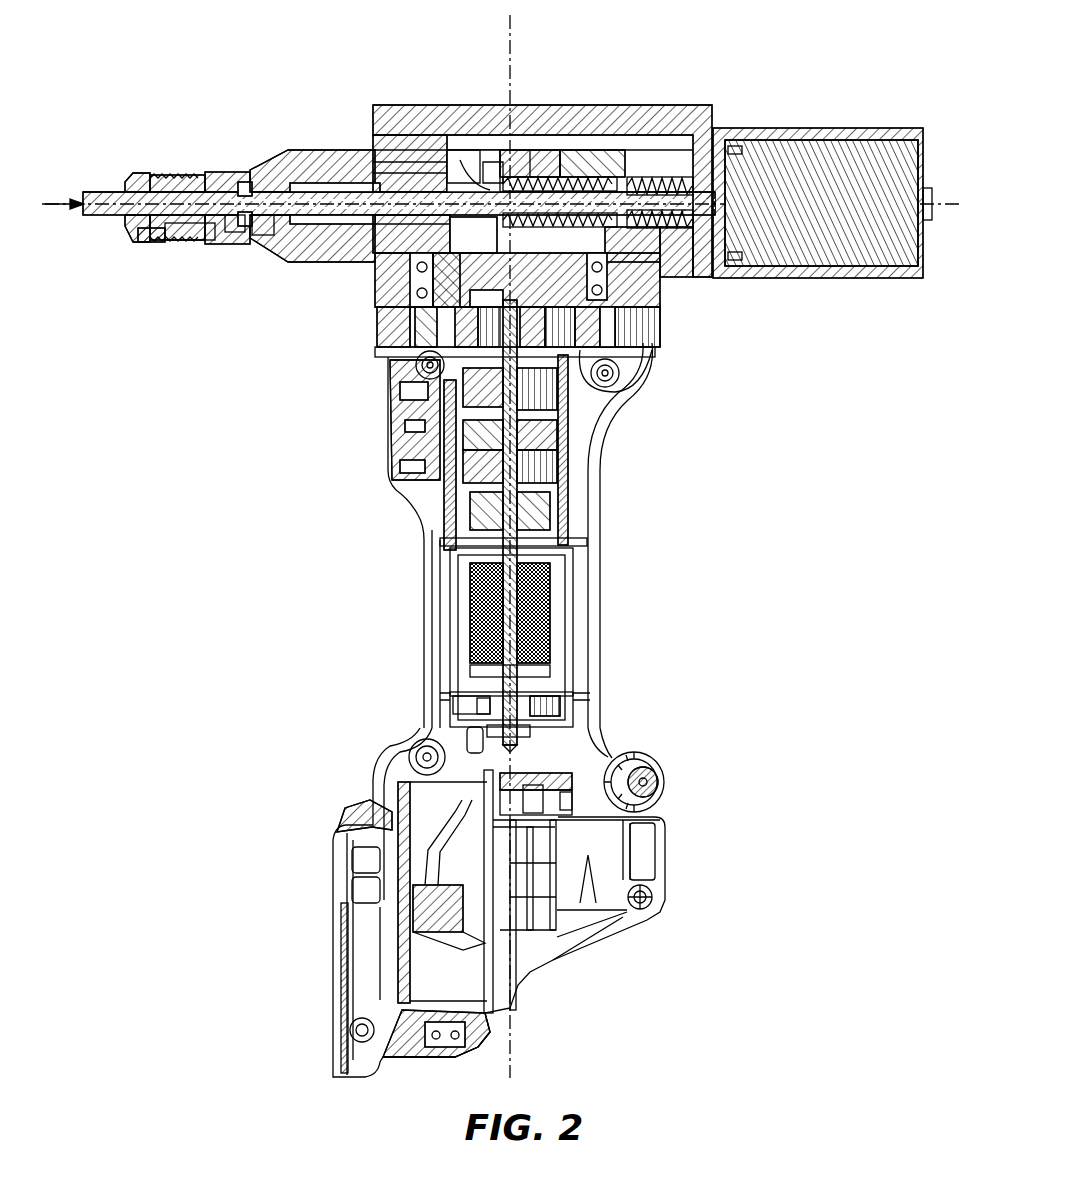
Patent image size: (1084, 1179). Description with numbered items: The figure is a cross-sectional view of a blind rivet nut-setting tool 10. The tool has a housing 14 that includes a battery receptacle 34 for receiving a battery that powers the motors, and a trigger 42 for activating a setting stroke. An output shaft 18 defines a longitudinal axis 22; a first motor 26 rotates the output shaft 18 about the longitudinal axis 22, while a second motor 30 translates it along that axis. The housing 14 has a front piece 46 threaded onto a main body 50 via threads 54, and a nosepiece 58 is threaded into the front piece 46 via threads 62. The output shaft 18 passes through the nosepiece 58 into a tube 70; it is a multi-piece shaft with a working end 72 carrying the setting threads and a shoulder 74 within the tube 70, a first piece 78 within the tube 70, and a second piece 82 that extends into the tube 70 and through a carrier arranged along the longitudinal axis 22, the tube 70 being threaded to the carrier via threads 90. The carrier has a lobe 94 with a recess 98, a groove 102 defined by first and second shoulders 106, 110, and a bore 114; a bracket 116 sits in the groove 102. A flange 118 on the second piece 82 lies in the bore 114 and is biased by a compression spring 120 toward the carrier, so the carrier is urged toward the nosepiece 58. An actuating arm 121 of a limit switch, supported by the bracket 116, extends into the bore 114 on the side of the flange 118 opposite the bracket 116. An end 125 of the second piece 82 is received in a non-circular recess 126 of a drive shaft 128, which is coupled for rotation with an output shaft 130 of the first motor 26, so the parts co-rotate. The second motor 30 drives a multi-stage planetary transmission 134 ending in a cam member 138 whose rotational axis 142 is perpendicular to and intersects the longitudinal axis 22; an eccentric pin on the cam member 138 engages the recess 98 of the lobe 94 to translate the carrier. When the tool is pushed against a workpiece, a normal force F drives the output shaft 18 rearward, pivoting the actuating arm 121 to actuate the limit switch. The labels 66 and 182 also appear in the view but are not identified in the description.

The blind rivet nut-setting tool 10 is at (244, 44).
The housing 14 is at (600, 516).
The output shaft 18 is at (118, 188).
The longitudinal axis 22 is at (95, 190).
The first motor 26 is at (872, 243).
The second motor 30 is at (470, 618).
The battery receptacle 34 is at (607, 940).
The trigger 42 is at (390, 442).
The front piece 46 is at (303, 153).
The main body 50 is at (380, 293).
The threads 54 is at (343, 260).
The nosepiece 58 is at (157, 172).
The threads 62 is at (155, 233).
The nut 66 is at (123, 175).
The tube 70 is at (217, 228).
The working end 72 is at (399, 200).
The shoulder 74 is at (222, 173).
The first piece 78 is at (243, 220).
The second piece 82 is at (318, 150).
The threads 90 is at (273, 227).
The lobe 94 is at (387, 340).
The recess 98 is at (397, 367).
The groove 102 is at (458, 135).
The first shoulder 106 is at (430, 140).
The second shoulder 110 is at (492, 150).
The bore 114 is at (590, 175).
The bracket 116 is at (470, 140).
The flange 118 is at (548, 170).
The compression spring 120 is at (637, 362).
The actuating arm 121 is at (612, 380).
The end 125 is at (657, 317).
The recess 126 is at (686, 175).
The drive shaft 128 is at (625, 250).
The output shaft 130 is at (717, 270).
The multi-stage planetary transmission 134 is at (560, 412).
The cam member 138 is at (650, 347).
The rotational axis 142 is at (511, 62).
The detent 182 is at (252, 180).
The normal force F is at (60, 206).